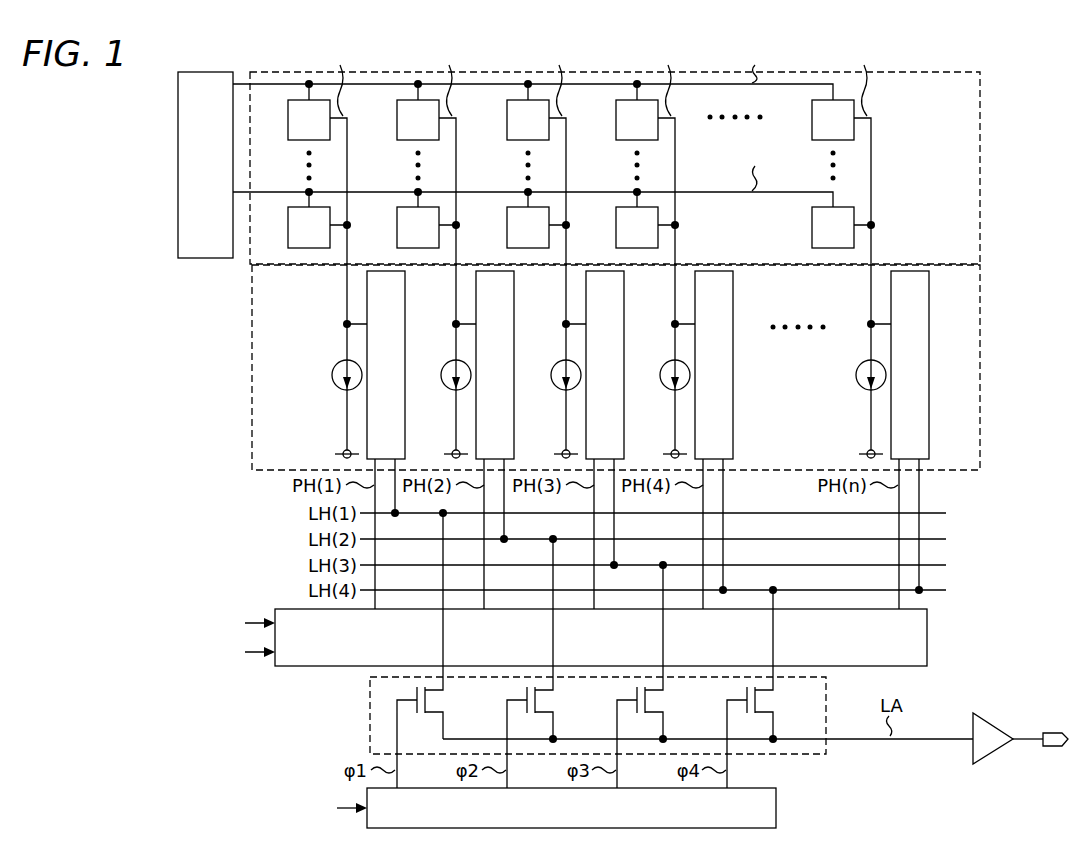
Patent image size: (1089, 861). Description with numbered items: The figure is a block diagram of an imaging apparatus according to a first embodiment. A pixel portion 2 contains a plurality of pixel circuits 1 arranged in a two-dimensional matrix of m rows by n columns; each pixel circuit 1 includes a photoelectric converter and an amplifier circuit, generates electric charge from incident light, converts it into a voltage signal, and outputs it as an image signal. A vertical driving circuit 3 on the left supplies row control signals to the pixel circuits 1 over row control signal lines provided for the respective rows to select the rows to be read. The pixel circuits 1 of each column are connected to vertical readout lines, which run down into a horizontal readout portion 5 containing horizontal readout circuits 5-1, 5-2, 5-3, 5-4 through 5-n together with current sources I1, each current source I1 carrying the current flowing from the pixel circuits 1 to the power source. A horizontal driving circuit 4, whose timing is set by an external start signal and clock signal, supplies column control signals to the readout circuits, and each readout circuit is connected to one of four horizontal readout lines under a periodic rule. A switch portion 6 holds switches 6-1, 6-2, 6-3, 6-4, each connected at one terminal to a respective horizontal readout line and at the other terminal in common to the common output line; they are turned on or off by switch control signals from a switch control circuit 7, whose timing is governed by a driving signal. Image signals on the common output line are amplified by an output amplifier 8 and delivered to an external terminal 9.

The pixel circuit 1 is at (554, 174).
The pixel portion 2 is at (981, 162).
The vertical driving circuit 3 is at (177, 158).
The horizontal driving circuit 4 is at (928, 635).
The horizontal readout portion 5 is at (633, 367).
The horizontal readout circuit 5-1 is at (405, 305).
The horizontal readout circuit 5-2 is at (514, 305).
The horizontal readout circuit 5-3 is at (624, 305).
The horizontal readout circuit 5-4 is at (733, 305).
The horizontal readout circuit 5-n is at (929, 305).
The switch portion 6 is at (368, 713).
The switch 6-1 is at (437, 700).
The switch 6-2 is at (547, 700).
The switch 6-3 is at (657, 700).
The switch 6-4 is at (767, 700).
The switch control circuit 7 is at (777, 807).
The output amplifier 8 is at (996, 723).
The external terminal 9 is at (1054, 730).
The current source I1 is at (332, 375).